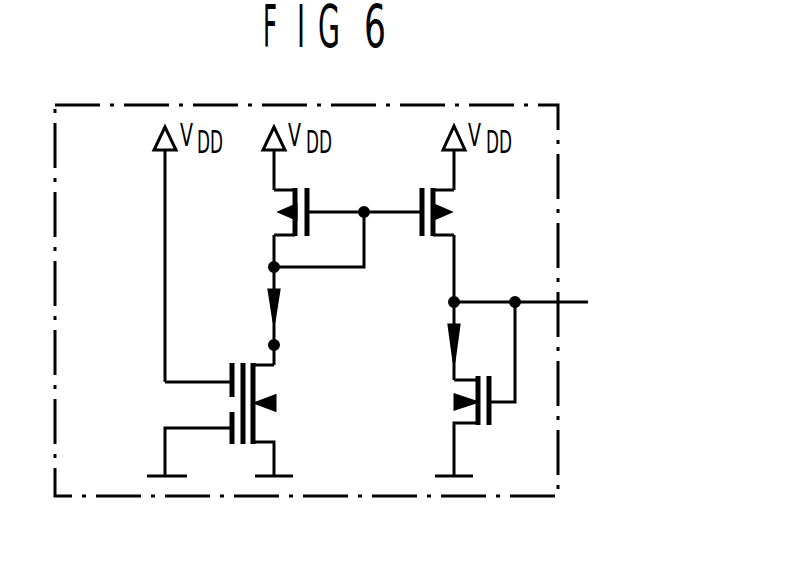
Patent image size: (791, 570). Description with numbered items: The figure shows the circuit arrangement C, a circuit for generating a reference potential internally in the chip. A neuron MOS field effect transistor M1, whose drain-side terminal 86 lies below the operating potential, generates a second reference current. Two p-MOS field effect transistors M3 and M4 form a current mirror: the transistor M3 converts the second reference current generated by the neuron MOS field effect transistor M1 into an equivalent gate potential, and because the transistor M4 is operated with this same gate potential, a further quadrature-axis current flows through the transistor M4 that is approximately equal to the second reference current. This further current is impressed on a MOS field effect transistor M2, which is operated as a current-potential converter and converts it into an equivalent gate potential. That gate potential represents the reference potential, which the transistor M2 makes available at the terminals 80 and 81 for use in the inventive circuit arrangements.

The terminal of the MOS field effect transistor M1 86 is at (272, 345).
The terminal 81 is at (452, 302).
The terminal 80 is at (515, 300).
The neuron MOS field effect transistor M1 is at (263, 420).
The MOS field effect transistor M2 is at (460, 415).
The p-MOS field effect transistor M3 is at (285, 201).
The p-MOS field effect transistor M4 is at (437, 200).
The circuit arrangement C is at (558, 170).